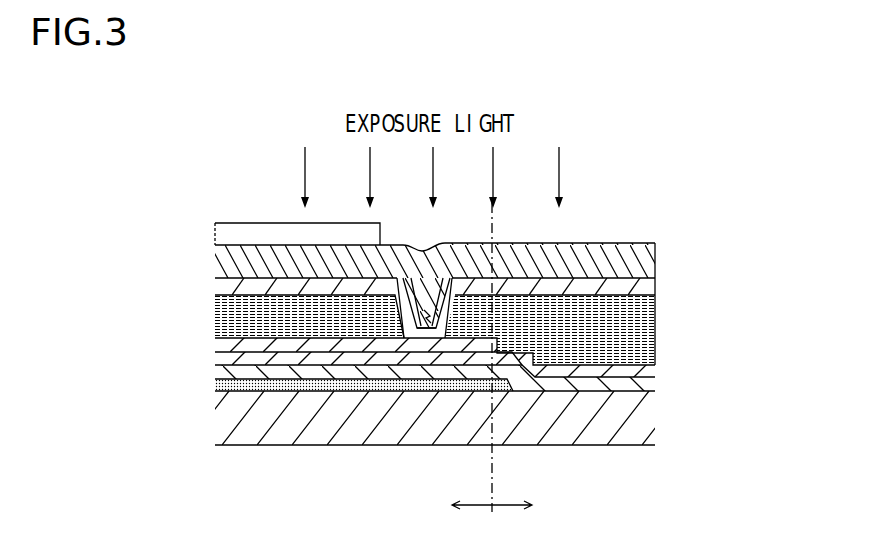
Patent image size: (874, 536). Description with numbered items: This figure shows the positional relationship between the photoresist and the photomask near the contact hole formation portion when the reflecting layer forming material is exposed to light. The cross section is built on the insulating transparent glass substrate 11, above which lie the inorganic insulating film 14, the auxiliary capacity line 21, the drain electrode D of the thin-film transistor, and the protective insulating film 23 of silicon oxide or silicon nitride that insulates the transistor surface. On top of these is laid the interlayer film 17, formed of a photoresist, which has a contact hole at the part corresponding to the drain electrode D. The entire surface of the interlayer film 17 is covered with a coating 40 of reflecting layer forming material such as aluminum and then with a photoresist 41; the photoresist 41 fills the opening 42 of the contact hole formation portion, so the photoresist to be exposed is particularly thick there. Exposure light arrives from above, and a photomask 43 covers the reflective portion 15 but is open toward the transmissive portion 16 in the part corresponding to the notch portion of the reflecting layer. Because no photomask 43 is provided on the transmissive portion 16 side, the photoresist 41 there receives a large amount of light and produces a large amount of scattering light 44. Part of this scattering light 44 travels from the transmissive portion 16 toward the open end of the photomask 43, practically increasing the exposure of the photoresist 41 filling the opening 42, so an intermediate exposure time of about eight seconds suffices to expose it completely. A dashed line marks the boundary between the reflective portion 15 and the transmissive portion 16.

The transparent glass substrate 11 is at (565, 436).
The inorganic insulating film 14 is at (647, 392).
The reflective portion 15 is at (340, 506).
The transmissive portion 16 is at (654, 506).
The interlayer film 17 is at (660, 318).
The auxiliary capacity line 21 is at (323, 384).
The protective insulating film 23 is at (656, 370).
The coating of reflecting layer forming material 40 is at (600, 270).
The photoresist 41 is at (638, 286).
The opening 42 is at (432, 331).
The photomask 43 is at (251, 231).
The scattering light 44 is at (434, 269).
The drain electrode D is at (250, 358).